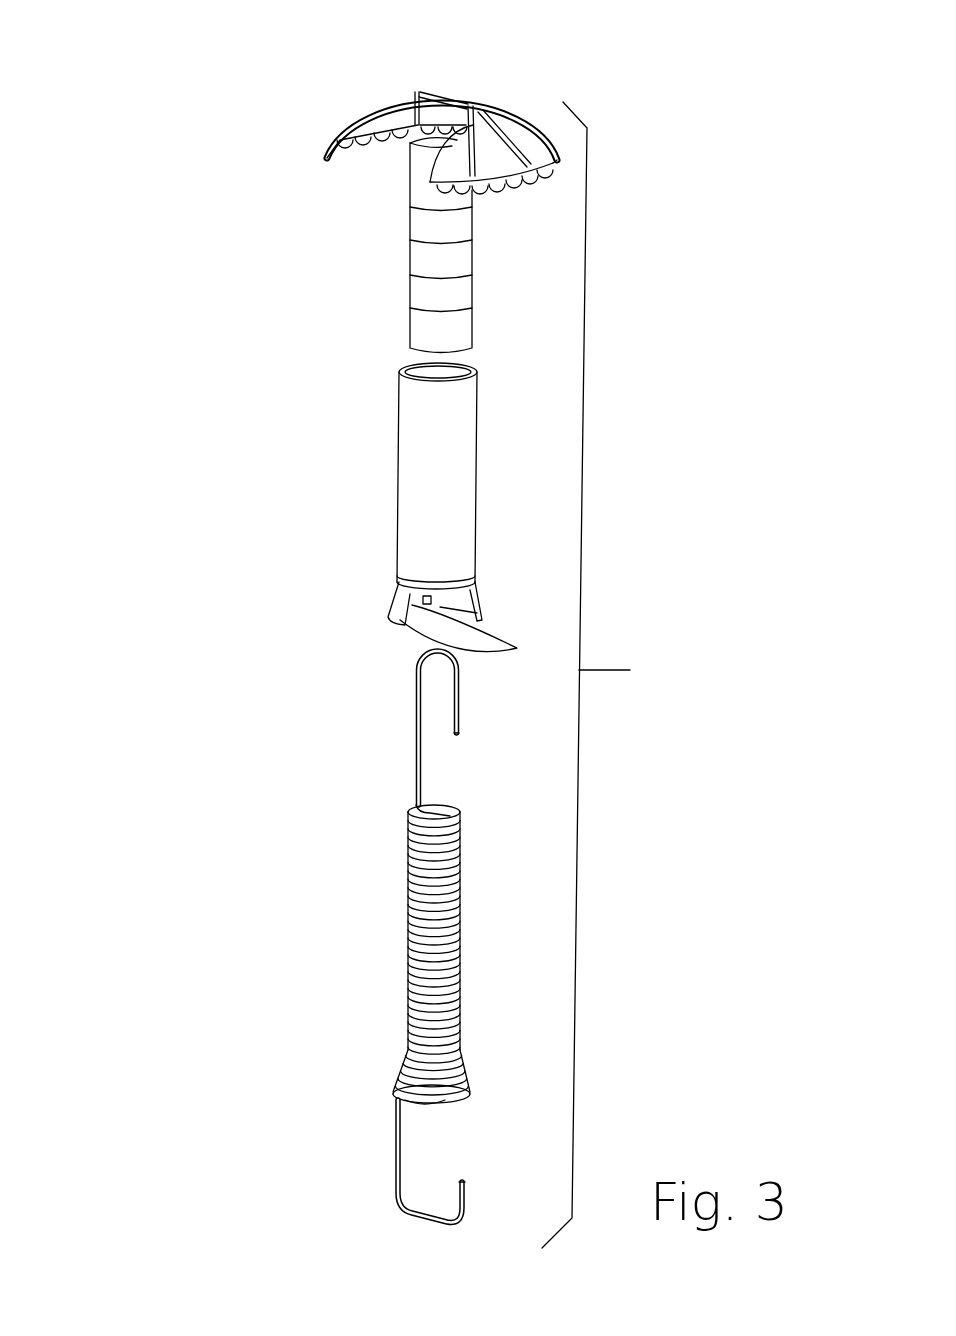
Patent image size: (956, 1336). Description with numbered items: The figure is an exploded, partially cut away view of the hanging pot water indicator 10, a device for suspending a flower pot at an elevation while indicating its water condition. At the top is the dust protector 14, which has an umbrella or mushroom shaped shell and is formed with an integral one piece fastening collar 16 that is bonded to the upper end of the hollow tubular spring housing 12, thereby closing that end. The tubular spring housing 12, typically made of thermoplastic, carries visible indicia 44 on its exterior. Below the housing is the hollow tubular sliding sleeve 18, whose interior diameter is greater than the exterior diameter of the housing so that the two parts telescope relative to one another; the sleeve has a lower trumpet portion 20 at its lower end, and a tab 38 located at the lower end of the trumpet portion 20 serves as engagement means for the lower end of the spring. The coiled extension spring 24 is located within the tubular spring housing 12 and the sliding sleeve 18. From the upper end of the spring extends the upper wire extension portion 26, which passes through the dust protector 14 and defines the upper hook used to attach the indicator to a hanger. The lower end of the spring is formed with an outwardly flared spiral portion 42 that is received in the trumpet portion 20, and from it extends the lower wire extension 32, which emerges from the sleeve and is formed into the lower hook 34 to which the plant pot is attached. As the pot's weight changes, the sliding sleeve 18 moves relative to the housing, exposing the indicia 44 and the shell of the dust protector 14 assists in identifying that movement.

The hanging pot water indicator 10 is at (180, 504).
The tubular spring housing 12 is at (417, 250).
The dust protector 14 is at (503, 62).
The fastening collar 16 is at (413, 118).
The sliding sleeve 18 is at (398, 433).
The trumpet portion 20 is at (395, 600).
The coiled extension spring 24 is at (408, 900).
The upper wire extension portion 26 is at (412, 741).
The lower wire extension 32 is at (395, 1152).
The lower hook 34 is at (436, 1212).
The tab 38 is at (519, 650).
The outwardly flared spiral portion 42 is at (467, 1067).
The visible indicia 44 is at (415, 308).